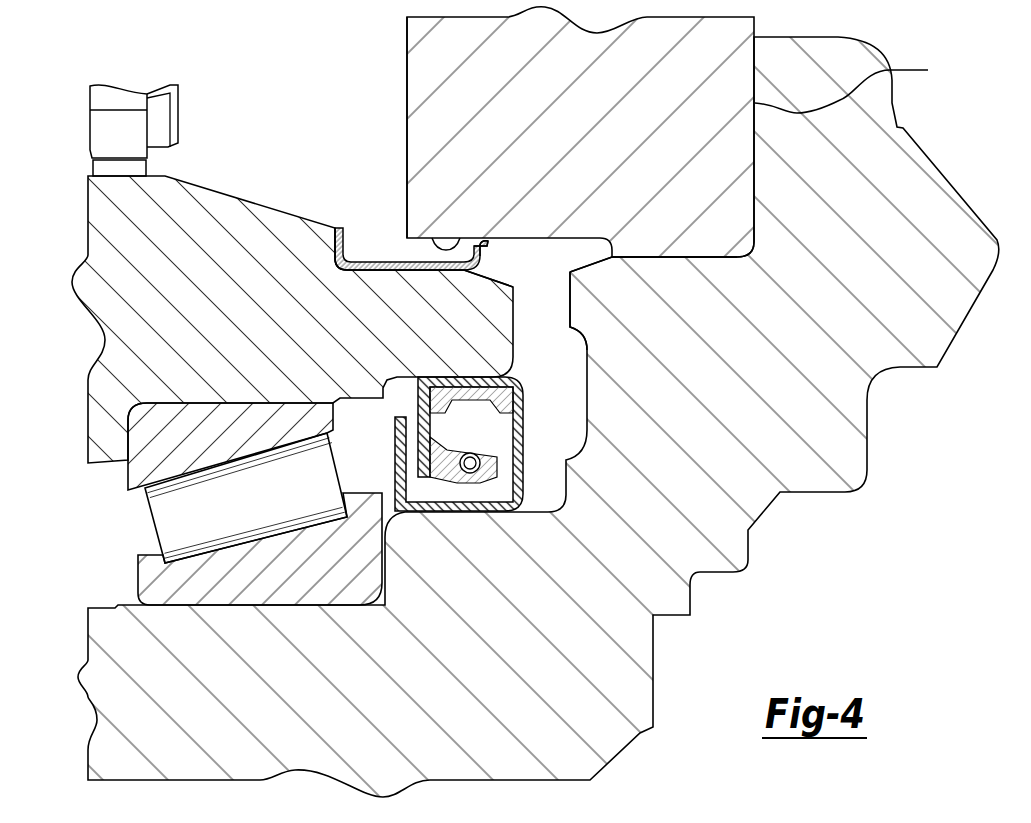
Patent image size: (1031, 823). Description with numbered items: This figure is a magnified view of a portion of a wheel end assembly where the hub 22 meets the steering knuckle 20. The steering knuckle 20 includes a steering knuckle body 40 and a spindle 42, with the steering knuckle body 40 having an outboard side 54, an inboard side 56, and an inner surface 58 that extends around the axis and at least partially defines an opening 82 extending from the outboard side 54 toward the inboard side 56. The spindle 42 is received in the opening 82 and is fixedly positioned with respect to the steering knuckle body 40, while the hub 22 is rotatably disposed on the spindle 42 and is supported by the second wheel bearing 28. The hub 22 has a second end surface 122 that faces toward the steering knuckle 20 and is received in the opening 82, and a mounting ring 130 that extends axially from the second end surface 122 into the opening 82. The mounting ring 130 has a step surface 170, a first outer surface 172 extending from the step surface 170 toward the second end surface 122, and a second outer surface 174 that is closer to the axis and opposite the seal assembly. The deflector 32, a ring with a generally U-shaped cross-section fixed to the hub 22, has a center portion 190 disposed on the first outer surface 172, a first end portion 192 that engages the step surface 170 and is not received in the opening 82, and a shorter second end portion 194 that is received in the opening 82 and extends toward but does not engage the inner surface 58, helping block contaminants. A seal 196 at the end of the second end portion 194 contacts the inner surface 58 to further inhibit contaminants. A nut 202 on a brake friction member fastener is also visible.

The steering knuckle 20 is at (580, 132).
The steering knuckle body 40 is at (555, 105).
The outboard side 54 is at (406, 90).
The inboard side 56 is at (854, 85).
The spindle 42 is at (931, 166).
The opening 82 is at (573, 243).
The second end surface 122 is at (515, 289).
The hub 22 is at (133, 336).
The second wheel bearing 28 is at (138, 583).
The deflector 32 is at (329, 273).
The inner surface 58 is at (450, 250).
The mounting ring 130 is at (414, 330).
The step surface 170 is at (344, 249).
The first outer surface 172 is at (413, 263).
The second outer surface 174 is at (474, 281).
The center portion 190 is at (404, 259).
The first end portion 192 is at (343, 236).
The second end portion 194 is at (463, 247).
The seal 196 is at (489, 241).
The nut 202 is at (150, 152).